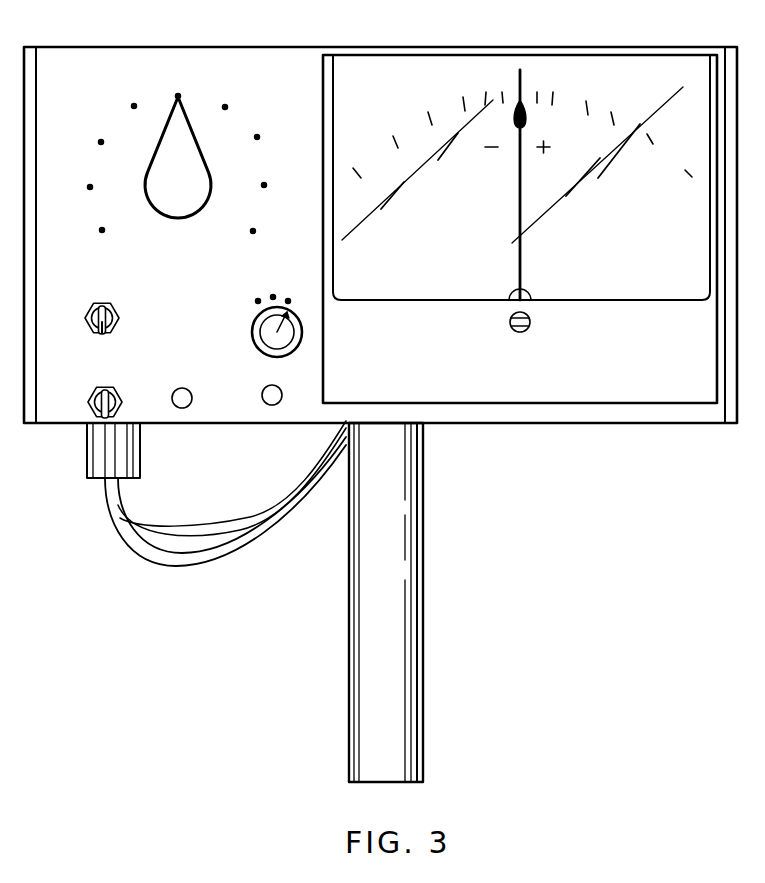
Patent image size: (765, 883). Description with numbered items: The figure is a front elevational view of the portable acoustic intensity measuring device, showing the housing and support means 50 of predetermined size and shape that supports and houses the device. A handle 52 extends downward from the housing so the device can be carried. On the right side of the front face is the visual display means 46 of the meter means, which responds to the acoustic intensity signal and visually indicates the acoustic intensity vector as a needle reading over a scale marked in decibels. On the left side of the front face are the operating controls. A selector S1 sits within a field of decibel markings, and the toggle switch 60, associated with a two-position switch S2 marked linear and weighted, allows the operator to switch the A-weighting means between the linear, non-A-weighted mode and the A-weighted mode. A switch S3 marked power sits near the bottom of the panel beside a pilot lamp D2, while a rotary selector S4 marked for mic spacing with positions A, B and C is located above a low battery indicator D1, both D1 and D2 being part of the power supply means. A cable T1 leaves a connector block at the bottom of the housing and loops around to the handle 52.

The housing and support means 50 is at (100, 47).
The visual display means 46 is at (358, 55).
The decibel range selector switch S1 is at (146, 187).
The linear/weighted selector switch S2 is at (88, 315).
The toggle switch 60 is at (116, 334).
The power switch S3 is at (91, 399).
The microphone spacing selector switch S4 is at (253, 330).
The pilot lamp D2 is at (192, 397).
The low battery indicator D1 is at (282, 396).
The microphone cable T1 is at (174, 555).
The handle 52 is at (424, 545).